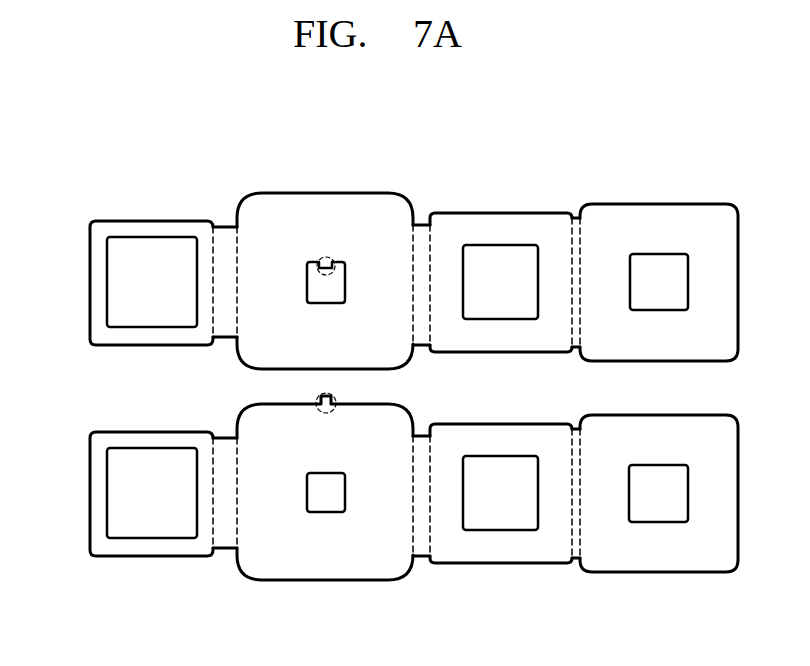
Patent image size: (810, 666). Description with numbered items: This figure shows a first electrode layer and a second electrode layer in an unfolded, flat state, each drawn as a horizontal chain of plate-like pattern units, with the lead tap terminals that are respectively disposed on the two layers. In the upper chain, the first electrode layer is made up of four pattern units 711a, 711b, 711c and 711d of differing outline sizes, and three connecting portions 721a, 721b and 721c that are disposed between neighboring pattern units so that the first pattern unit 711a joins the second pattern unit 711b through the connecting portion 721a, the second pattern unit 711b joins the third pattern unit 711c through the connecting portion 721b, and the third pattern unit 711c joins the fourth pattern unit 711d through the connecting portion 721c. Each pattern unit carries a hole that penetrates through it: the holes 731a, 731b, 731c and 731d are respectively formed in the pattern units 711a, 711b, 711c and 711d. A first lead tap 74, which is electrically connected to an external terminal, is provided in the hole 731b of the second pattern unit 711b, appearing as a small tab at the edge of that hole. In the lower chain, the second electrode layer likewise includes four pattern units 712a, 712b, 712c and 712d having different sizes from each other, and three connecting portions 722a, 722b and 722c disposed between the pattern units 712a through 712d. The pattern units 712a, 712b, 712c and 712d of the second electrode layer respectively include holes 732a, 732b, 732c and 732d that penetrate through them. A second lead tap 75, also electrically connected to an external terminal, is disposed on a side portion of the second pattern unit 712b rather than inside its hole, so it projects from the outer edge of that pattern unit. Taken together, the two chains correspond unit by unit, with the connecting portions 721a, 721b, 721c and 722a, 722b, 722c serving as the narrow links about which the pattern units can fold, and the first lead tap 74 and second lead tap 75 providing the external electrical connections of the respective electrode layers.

The pattern unit 711a is at (150, 221).
The second pattern unit 711b is at (382, 193).
The pattern unit 711c is at (480, 213).
The pattern unit 711d is at (645, 204).
The connecting portion 721a is at (223, 228).
The connecting portion 721b is at (421, 225).
The connecting portion 721c is at (576, 218).
The hole 731a is at (114, 278).
The hole 731b is at (313, 284).
The hole 731c is at (525, 257).
The hole 731d is at (682, 267).
The first lead tap 74 is at (327, 258).
The second lead tap 75 is at (338, 399).
The pattern unit 712a is at (157, 556).
The second pattern unit 712b is at (352, 581).
The pattern unit 712c is at (512, 563).
The pattern unit 712d is at (710, 572).
The connecting portion 722a is at (225, 548).
The connecting portion 722b is at (418, 556).
The connecting portion 722c is at (574, 558).
The hole 732a is at (130, 527).
The hole 732b is at (320, 512).
The hole 732c is at (480, 522).
The hole 732d is at (650, 513).